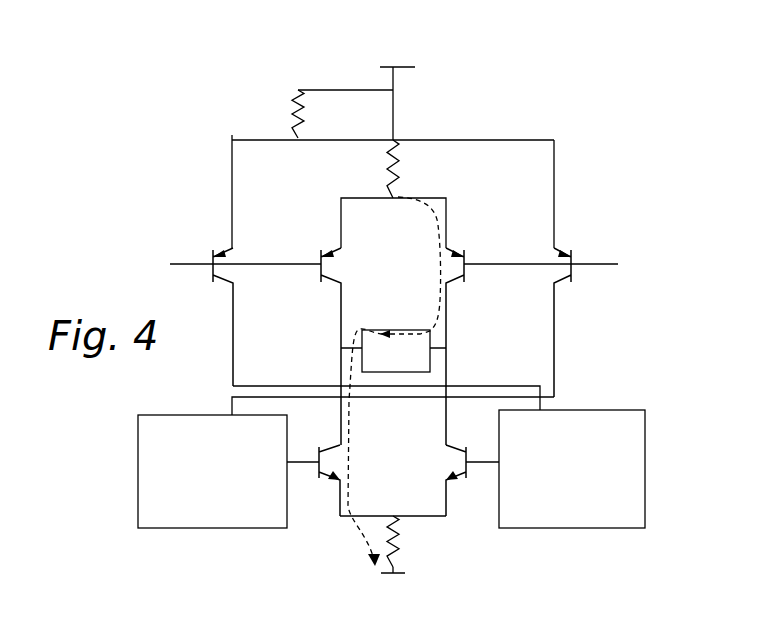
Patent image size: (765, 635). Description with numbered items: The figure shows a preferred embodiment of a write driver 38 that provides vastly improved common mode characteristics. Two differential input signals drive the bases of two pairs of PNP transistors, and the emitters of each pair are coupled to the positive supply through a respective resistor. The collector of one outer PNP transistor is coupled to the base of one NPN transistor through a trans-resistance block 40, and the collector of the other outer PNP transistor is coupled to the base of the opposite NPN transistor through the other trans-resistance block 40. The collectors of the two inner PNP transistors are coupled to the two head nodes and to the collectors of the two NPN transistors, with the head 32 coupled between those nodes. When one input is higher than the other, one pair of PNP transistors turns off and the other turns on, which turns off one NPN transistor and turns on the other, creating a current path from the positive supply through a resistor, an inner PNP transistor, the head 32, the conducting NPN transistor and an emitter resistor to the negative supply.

The write driver 38 is at (74, 110).
The head 32 is at (398, 330).
The trans-resistance block 40 is at (391, 469).